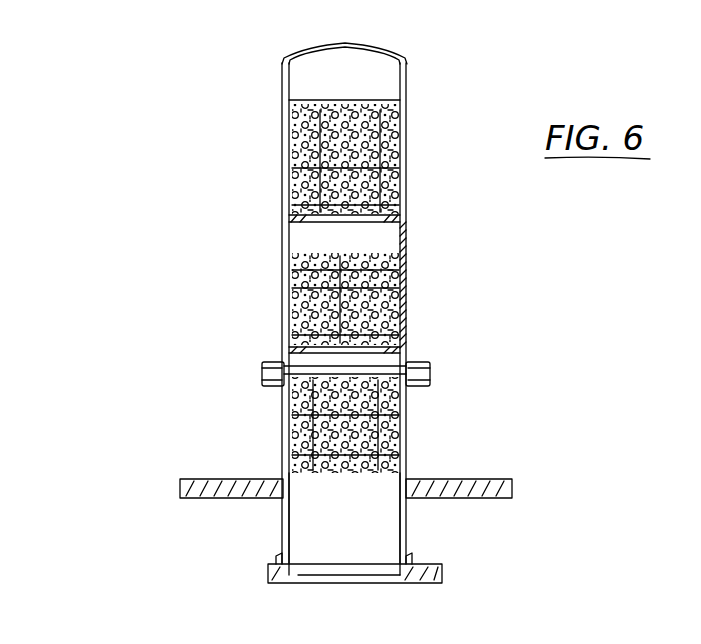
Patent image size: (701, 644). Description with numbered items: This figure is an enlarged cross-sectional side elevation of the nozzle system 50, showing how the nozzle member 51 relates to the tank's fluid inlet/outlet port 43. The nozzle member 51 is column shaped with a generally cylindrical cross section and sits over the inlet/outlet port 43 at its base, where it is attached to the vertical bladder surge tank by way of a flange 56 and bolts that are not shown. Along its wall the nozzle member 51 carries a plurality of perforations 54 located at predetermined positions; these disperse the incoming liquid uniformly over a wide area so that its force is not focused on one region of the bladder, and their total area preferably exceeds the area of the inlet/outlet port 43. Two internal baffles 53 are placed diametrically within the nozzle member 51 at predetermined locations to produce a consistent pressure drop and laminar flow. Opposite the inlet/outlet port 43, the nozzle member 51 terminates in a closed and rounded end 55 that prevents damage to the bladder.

The inlet/outlet port 43 is at (383, 583).
The nozzle system 50 is at (412, 290).
The nozzle member 51 is at (320, 497).
The internal baffles 53 is at (310, 233).
The perforations 54 is at (410, 160).
The closed and rounded end 55 is at (296, 43).
The flange 56 is at (173, 498).